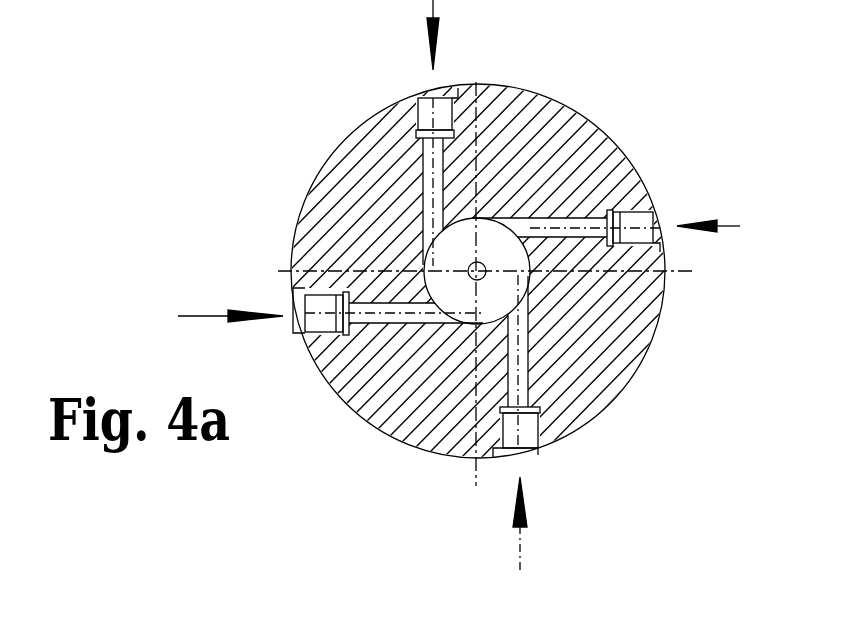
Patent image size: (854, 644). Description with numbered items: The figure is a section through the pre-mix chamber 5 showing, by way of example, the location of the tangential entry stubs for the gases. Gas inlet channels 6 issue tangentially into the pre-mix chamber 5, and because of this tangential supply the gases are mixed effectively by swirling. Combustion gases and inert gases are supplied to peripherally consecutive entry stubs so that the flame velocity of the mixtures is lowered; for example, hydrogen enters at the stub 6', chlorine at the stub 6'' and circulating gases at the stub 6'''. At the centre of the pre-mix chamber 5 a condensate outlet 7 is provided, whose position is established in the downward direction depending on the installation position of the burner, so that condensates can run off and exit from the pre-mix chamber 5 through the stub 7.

The pre-mix chamber 5 is at (463, 305).
The gas inlet channel 6 is at (394, 177).
The entry stub for hydrogen 6' is at (566, 170).
The entry stub for chlorine 6'' is at (548, 372).
The entry stub for circulating gases 6''' is at (372, 276).
The condensate outlet 7 is at (479, 264).